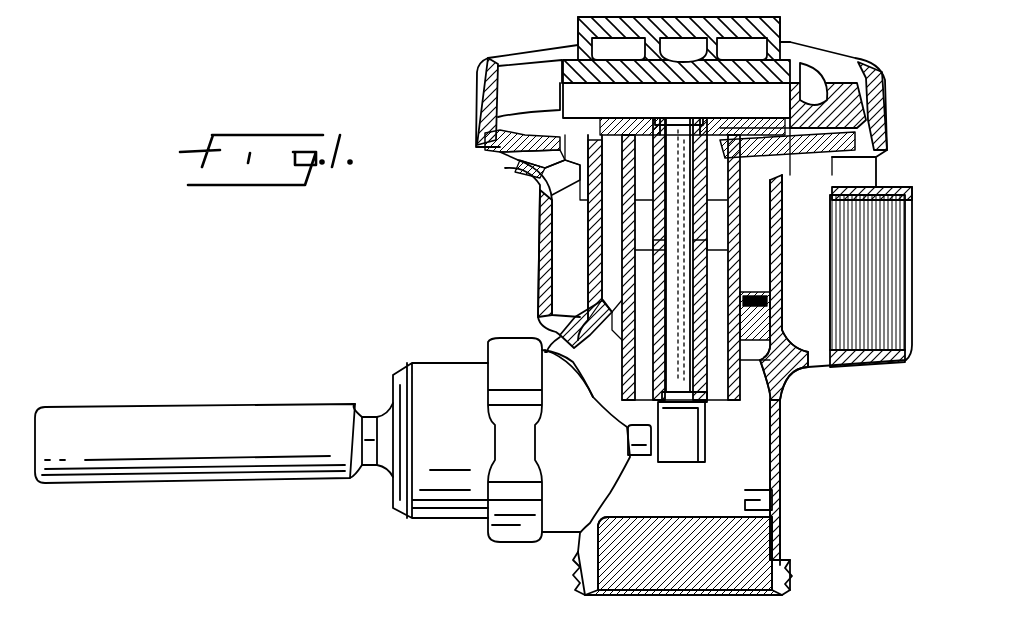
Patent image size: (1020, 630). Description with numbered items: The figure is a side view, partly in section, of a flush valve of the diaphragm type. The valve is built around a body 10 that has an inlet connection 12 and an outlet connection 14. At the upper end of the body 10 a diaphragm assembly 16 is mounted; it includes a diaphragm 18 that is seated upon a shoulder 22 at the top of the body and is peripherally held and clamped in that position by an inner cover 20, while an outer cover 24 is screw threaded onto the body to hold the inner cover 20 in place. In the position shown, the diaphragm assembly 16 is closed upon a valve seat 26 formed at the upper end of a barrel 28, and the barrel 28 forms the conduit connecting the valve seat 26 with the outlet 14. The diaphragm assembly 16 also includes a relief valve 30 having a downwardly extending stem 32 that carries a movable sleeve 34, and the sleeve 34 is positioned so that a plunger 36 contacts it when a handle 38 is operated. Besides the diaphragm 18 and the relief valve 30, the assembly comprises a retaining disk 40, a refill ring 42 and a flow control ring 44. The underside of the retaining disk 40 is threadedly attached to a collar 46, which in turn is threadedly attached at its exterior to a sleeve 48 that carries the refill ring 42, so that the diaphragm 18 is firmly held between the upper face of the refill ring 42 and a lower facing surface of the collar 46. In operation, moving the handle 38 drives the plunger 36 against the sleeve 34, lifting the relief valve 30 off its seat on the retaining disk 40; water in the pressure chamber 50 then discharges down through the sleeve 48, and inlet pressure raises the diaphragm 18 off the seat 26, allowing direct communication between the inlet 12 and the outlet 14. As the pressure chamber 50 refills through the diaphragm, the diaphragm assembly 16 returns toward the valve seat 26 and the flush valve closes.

The body 10 is at (537, 262).
The inlet connection 12 is at (915, 343).
The outlet connection 14 is at (682, 573).
The diaphragm assembly 16 is at (537, 198).
The diaphragm 18 is at (530, 177).
The inner cover 20 is at (820, 100).
The shoulder 22 is at (492, 133).
The outer cover 24 is at (578, 28).
The valve seat 26 is at (780, 163).
The barrel 28 is at (770, 280).
The relief valve 30 is at (612, 118).
The stem 32 is at (688, 210).
The movable sleeve 34 is at (705, 440).
The plunger 36 is at (640, 455).
The handle 38 is at (250, 417).
The retaining disk 40 is at (782, 118).
The refill ring 42 is at (603, 200).
The flow control ring 44 is at (758, 300).
The collar 46 is at (667, 203).
The sleeve 48 is at (622, 258).
The pressure chamber 50 is at (690, 109).